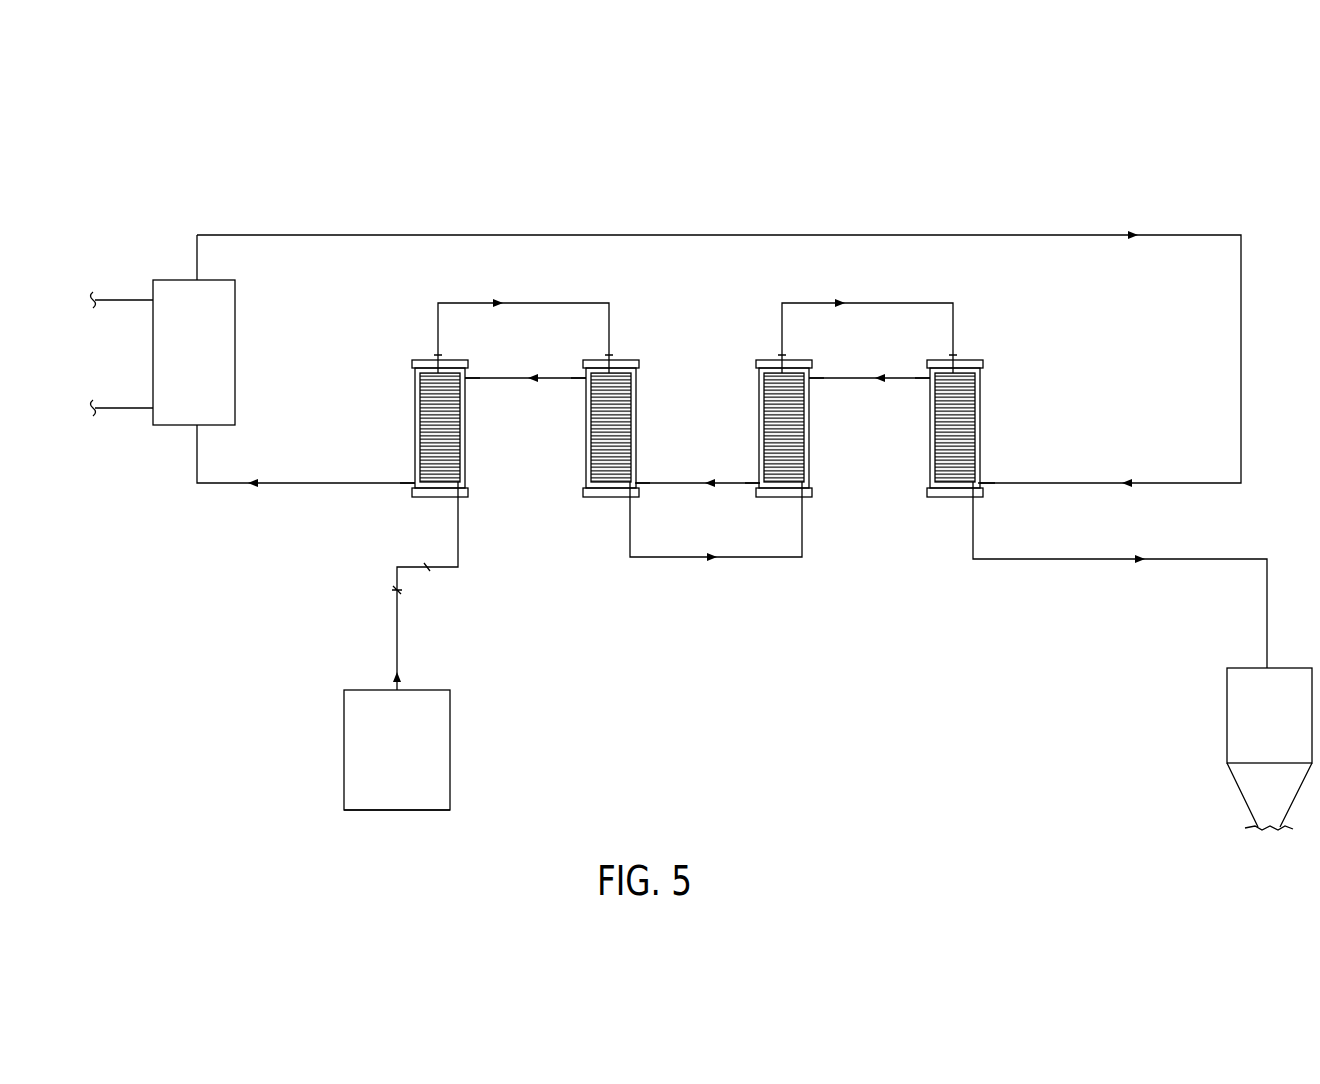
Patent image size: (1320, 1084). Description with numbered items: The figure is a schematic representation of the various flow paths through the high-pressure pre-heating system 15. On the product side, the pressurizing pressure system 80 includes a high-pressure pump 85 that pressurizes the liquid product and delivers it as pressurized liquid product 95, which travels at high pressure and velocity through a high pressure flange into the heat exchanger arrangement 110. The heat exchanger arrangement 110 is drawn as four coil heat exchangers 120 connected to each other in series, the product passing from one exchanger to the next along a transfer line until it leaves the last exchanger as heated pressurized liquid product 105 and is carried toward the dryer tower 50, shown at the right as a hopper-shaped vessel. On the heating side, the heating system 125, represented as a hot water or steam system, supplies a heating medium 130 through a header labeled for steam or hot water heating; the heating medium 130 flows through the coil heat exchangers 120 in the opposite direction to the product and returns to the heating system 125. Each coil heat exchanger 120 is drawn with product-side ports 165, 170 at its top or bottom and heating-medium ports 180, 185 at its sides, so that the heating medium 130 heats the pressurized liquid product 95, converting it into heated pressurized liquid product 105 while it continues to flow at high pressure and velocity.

The high-pressure pre-heating system 15 is at (1127, 165).
The dryer tower 50 is at (1226, 787).
The pressurizing pressure system 80 is at (360, 805).
The high-pressure pump 85 is at (363, 732).
The pressurized liquid product 95 is at (403, 608).
The heated pressurized liquid product 105 is at (432, 315).
The heat exchanger arrangement 110 is at (738, 175).
The coil heat exchangers 120 is at (498, 255).
The heating system 125 is at (162, 277).
The heating medium 130 is at (332, 233).
The product inlet port 165 is at (453, 503).
The product outlet port 170 is at (437, 345).
The heating medium inlet 180 is at (468, 392).
The heating medium outlet 185 is at (414, 470).